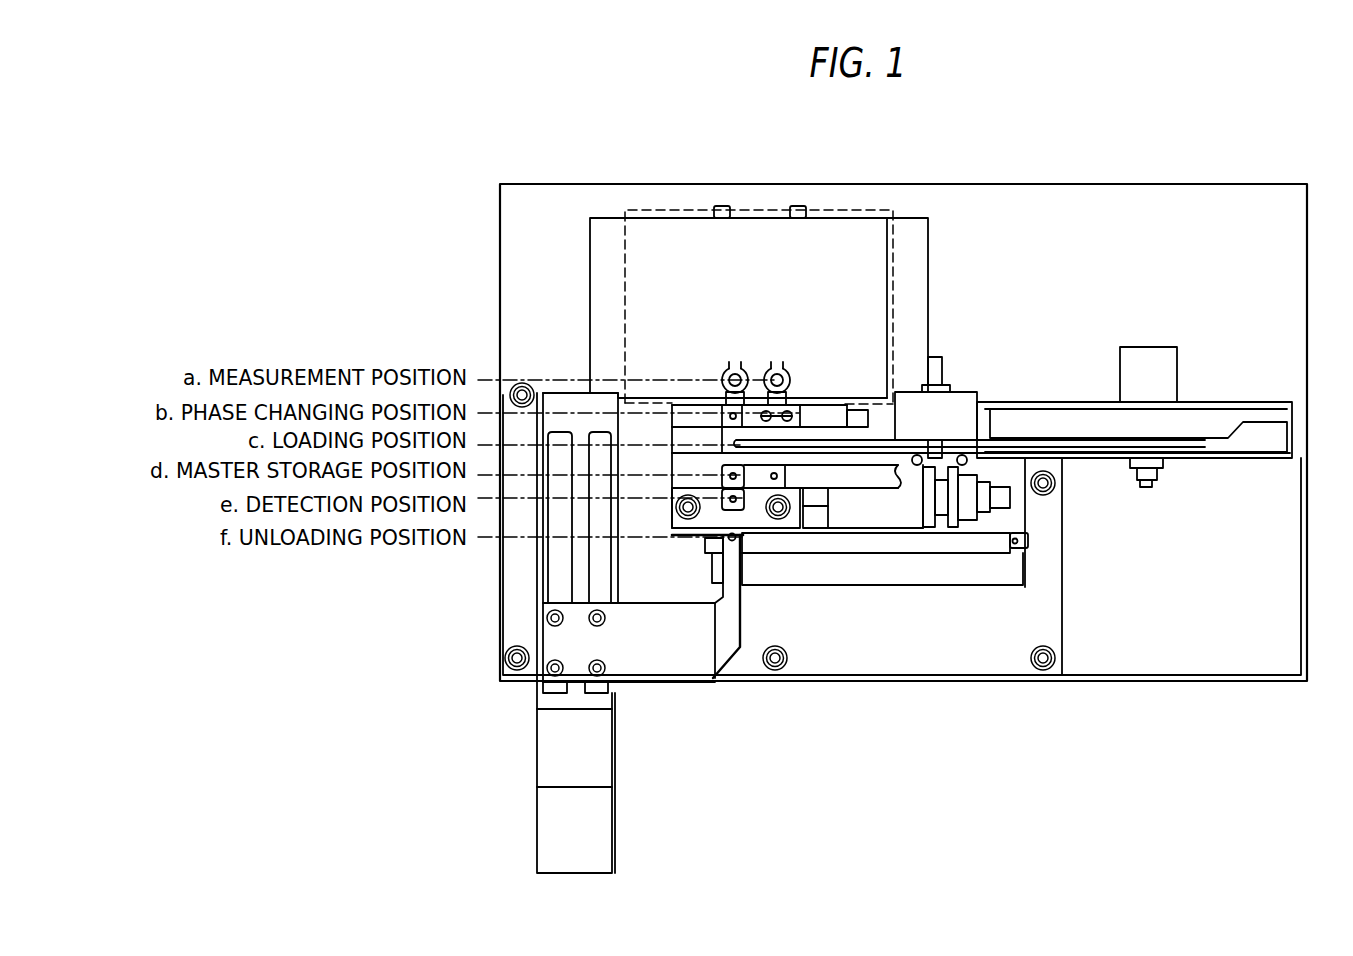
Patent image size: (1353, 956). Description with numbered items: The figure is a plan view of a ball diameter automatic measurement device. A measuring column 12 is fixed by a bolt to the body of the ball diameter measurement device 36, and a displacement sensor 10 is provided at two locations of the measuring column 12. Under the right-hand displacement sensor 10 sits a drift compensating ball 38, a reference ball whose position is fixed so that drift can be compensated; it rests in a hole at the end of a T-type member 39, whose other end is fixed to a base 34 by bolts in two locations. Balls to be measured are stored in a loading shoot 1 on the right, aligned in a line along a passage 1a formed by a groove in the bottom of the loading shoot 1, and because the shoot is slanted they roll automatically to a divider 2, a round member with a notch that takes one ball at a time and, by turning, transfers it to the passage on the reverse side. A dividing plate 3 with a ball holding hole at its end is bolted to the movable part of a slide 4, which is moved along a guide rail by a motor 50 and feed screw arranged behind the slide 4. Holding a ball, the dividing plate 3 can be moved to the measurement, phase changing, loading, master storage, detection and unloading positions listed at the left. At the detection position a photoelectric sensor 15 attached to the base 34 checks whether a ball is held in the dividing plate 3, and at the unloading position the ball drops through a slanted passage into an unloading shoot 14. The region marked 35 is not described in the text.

The loading shoot 1 is at (1277, 433).
The passage 1a is at (1224, 462).
The divider 2 is at (957, 400).
The dividing plate 3 is at (672, 662).
The slide 4 is at (543, 702).
The displacement sensor 10 is at (737, 366).
The measuring column 12 is at (858, 232).
The unloading shoot 14 is at (1018, 553).
The photoelectric sensor 15 is at (742, 508).
The base 34 is at (790, 526).
The measuring region 35 is at (644, 208).
The ball diameter measurement device 36 is at (1147, 213).
The drift compensating ball 38 is at (773, 377).
The T-type member 39 is at (795, 397).
The motor 50 is at (560, 824).